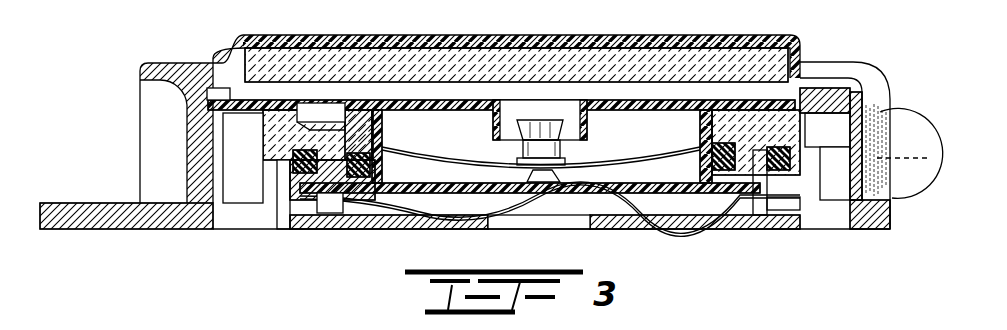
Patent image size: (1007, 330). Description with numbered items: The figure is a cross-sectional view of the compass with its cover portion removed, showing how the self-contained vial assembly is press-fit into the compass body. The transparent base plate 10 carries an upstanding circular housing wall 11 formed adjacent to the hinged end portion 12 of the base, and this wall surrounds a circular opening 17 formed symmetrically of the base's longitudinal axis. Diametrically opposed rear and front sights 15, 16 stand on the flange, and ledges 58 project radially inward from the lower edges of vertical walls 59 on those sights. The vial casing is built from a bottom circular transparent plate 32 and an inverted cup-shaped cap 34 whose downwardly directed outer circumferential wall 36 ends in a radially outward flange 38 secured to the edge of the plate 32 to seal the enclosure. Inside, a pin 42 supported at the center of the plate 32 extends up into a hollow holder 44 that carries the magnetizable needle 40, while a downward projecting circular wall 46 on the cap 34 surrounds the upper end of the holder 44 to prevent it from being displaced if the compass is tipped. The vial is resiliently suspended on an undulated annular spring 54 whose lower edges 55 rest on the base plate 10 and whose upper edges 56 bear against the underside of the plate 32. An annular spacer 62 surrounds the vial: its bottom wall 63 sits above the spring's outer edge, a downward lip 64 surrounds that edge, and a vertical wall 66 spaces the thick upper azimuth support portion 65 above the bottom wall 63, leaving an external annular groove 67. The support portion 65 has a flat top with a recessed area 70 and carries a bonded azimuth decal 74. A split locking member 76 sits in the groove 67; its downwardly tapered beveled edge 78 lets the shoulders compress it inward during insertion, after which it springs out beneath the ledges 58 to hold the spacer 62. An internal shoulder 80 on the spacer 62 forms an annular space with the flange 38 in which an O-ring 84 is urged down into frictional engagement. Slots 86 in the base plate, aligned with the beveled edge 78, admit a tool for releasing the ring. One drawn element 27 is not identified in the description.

The base plate 10 is at (135, 234).
The housing wall 11 is at (830, 215).
The hinged end portion 12 is at (905, 170).
The rear sight 15 is at (200, 133).
The front sight 16 is at (848, 85).
The circular opening 17 is at (492, 215).
The cover block 27 is at (290, 62).
The bottom circular transparent plate 32 is at (620, 178).
The cap 34 is at (633, 108).
The outer circumferential wall 36 is at (700, 125).
The flange 38 is at (368, 215).
The needle 40 is at (428, 145).
The pin 42 is at (528, 171).
The holder 44 is at (522, 122).
The circular wall 46 is at (495, 128).
The annular spring 54 is at (437, 214).
The lower edges 55 is at (643, 210).
The upper edges 56 is at (533, 200).
The ledges 58 is at (264, 162).
The vertical walls 59 is at (878, 103).
The spacer 62 is at (765, 108).
The bottom wall 63 is at (770, 215).
The lip 64 is at (793, 188).
The upper support portion 65 is at (717, 105).
The vertical wall 66 is at (332, 205).
The external annular groove 67 is at (785, 160).
The recessed area 70 is at (335, 112).
The decal 74 is at (318, 102).
The locking member 76 is at (296, 180).
The beveled edge 78 is at (295, 160).
The internal shoulder 80 is at (712, 158).
The O-ring 84 is at (378, 165).
The slots 86 is at (285, 230).